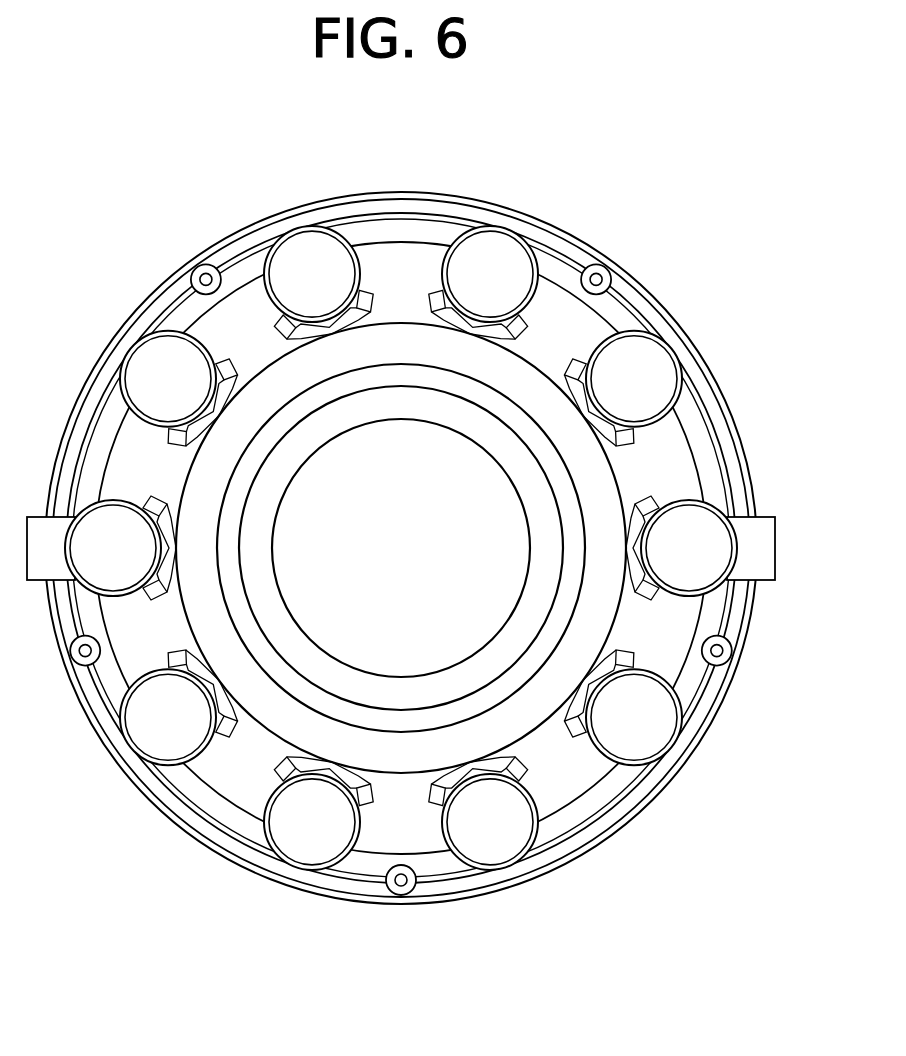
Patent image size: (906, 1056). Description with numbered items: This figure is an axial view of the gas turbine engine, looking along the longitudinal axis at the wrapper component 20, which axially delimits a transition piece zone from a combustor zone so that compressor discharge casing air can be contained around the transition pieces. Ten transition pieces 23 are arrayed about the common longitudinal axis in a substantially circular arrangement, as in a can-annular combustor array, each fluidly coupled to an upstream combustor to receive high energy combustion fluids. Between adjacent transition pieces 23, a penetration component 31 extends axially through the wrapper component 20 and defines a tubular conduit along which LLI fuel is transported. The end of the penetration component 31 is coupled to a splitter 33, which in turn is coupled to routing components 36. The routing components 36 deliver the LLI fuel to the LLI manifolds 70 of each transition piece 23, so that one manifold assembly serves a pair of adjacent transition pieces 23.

The wrapper component 20 is at (427, 528).
The transition piece 23 is at (473, 227).
The penetration component 31 is at (618, 286).
The splitter 33 is at (606, 278).
The routing component 36 is at (553, 257).
The LLI manifold 70 is at (510, 222).